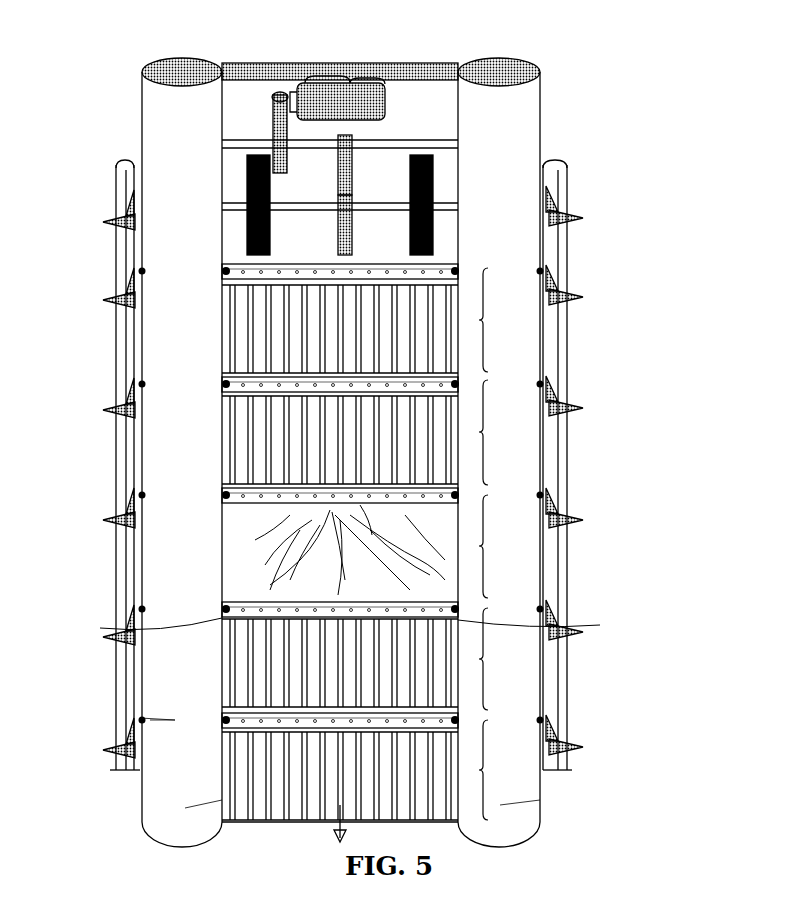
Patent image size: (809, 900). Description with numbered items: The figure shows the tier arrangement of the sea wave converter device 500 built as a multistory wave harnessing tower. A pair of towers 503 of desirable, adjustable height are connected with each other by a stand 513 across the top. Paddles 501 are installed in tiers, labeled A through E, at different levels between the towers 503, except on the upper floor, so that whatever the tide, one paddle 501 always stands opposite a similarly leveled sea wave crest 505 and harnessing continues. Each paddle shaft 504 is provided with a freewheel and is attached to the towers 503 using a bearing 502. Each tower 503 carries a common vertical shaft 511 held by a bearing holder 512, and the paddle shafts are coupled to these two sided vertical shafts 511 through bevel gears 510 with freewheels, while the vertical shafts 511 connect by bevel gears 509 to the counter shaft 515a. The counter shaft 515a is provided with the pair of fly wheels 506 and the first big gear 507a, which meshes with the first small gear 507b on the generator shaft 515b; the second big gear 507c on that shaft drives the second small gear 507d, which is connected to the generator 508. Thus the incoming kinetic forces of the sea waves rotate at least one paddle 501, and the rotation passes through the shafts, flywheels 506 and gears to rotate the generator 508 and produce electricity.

The sea wave converter device 500 is at (116, 62).
The paddles 501 is at (410, 352).
The bearing 502 is at (221, 382).
The towers 503 is at (175, 115).
The paddle shaft 504 is at (240, 268).
The sea wave crest 505 is at (327, 528).
The fly wheels 506 is at (270, 236).
The first big gear 507a is at (352, 215).
The first small gear 507b is at (352, 150).
The second big gear 507c is at (276, 140).
The second small gear 507d is at (272, 97).
The generator 508 is at (350, 102).
The bevel gears 509 is at (120, 300).
The bevel gears 510 is at (140, 258).
The common shaft 511 is at (136, 437).
The bearing holder 512 is at (120, 770).
The stand 513 is at (433, 72).
The counter shaft 515a is at (225, 205).
The generator shaft 515b is at (228, 146).